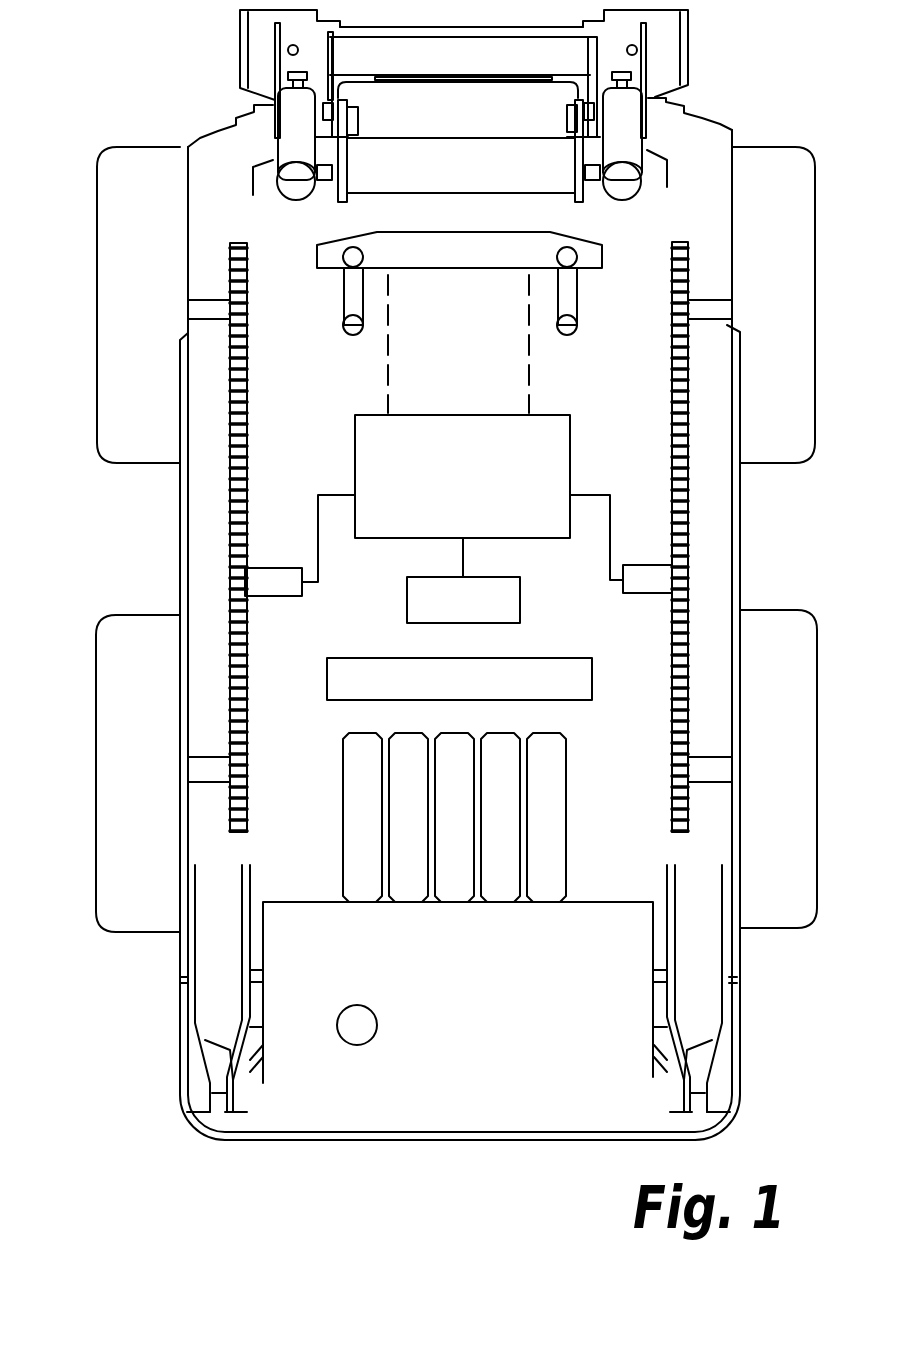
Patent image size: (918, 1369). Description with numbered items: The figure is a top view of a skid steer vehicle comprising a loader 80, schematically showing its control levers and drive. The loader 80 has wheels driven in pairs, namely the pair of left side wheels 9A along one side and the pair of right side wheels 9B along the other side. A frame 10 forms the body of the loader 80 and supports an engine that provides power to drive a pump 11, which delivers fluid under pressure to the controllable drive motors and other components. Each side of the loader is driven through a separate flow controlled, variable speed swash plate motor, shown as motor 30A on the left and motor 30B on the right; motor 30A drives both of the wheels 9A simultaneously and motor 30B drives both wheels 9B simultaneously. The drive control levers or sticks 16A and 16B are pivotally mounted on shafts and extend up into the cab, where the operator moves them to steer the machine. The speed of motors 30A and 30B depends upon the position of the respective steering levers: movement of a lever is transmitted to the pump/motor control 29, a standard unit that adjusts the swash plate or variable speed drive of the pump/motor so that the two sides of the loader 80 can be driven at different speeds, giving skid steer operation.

The loader 80 is at (157, 496).
The frame 10 is at (730, 497).
The left side wheels 9A is at (127, 348).
The right side wheels 9B is at (788, 333).
The drive control lever 16A is at (353, 335).
The drive control lever 16B is at (567, 335).
The pump/motor control 29 is at (395, 540).
The pump 11 is at (492, 623).
The variable speed motor 30A is at (268, 587).
The variable speed motor 30B is at (643, 582).